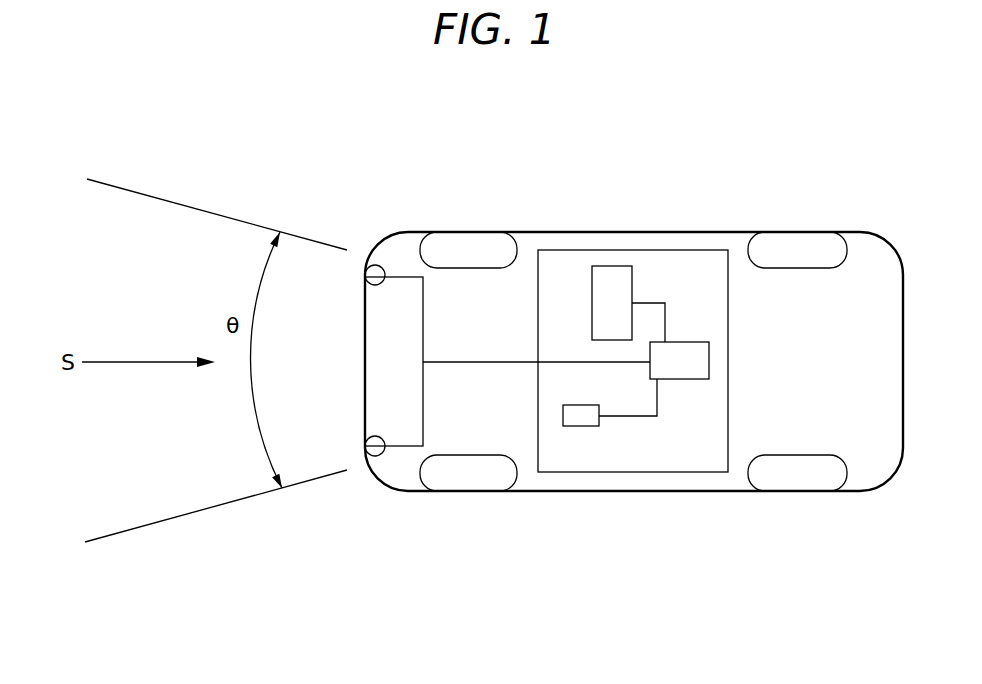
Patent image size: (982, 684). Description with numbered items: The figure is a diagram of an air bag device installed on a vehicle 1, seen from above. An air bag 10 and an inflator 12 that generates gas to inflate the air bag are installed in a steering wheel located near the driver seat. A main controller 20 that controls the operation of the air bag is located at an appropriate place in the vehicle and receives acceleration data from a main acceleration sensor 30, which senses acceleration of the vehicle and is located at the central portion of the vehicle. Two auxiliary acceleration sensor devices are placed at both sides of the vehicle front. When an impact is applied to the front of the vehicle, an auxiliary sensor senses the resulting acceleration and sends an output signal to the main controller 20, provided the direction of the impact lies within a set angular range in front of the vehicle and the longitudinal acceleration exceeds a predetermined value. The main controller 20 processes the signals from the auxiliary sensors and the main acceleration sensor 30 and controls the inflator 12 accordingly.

The vehicle 1 is at (609, 156).
The air bag 10 is at (613, 305).
The inflator 12 is at (612, 272).
The main controller 20 is at (684, 370).
The main acceleration sensor 30 is at (580, 420).